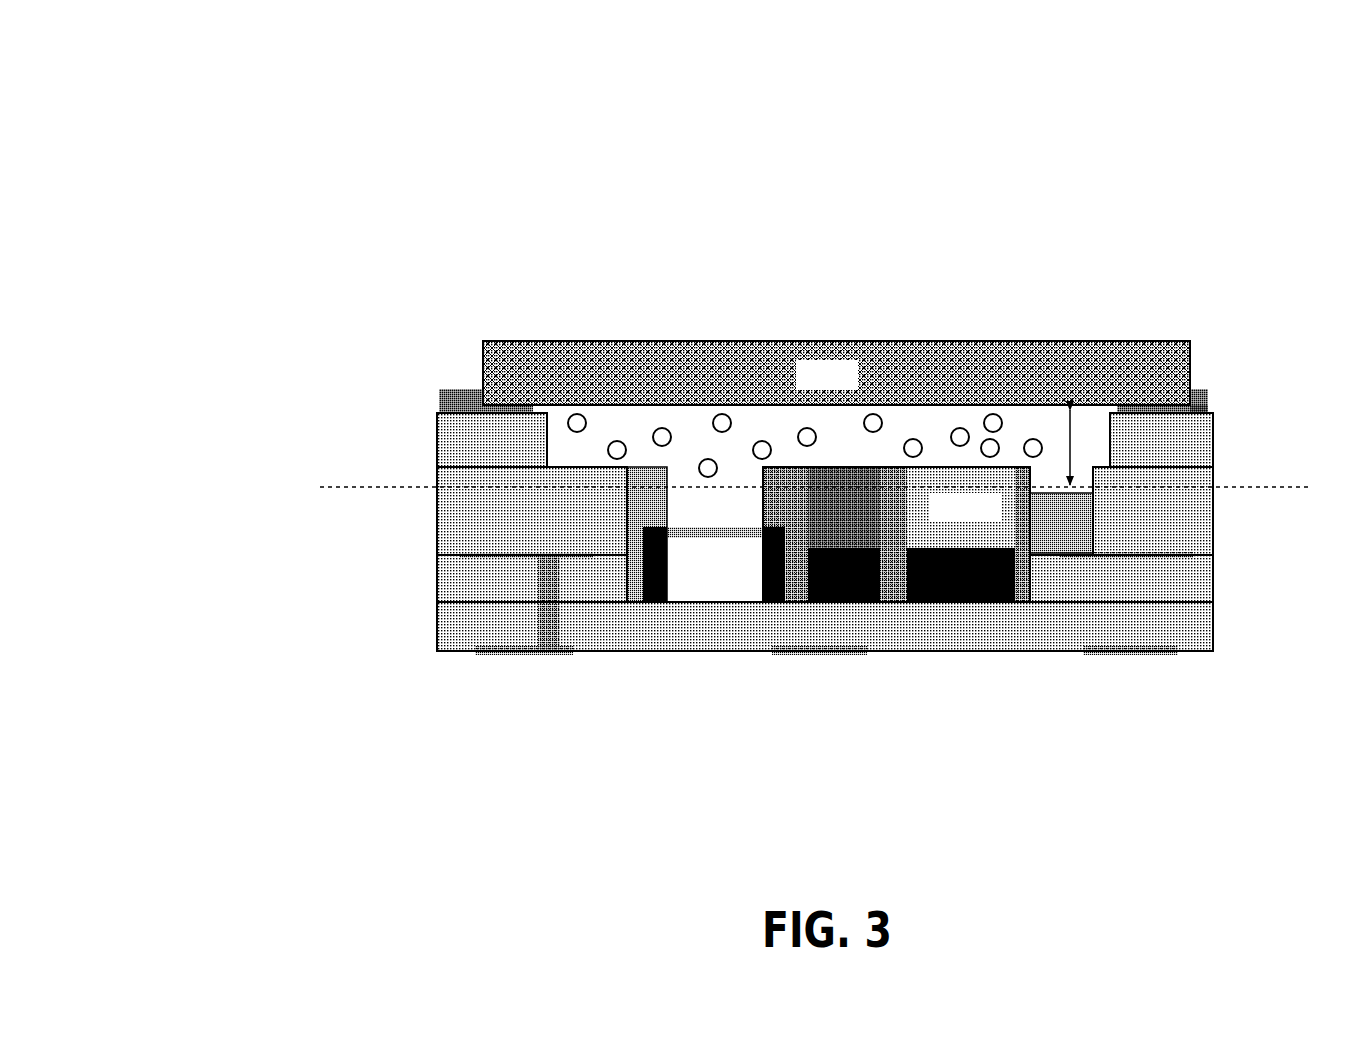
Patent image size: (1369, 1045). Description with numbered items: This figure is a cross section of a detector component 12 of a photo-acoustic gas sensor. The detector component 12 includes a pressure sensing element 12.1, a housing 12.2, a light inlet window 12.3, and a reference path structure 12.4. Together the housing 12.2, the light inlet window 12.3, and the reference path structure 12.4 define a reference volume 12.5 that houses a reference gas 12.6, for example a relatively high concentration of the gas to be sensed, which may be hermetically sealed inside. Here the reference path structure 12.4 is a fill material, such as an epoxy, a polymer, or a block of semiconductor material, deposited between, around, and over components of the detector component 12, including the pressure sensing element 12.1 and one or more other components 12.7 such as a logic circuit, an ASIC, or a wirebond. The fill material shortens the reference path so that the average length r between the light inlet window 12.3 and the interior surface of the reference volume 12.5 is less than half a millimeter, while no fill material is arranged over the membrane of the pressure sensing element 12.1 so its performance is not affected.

The detector component 12 is at (320, 57).
The pressure sensing element 12.1 is at (715, 564).
The housing 12.2 is at (445, 442).
The light inlet window 12.3 is at (836, 373).
The reference path structure 12.4 is at (896, 596).
The reference volume 12.5 is at (926, 430).
The reference gas 12.6 is at (662, 428).
The other components 12.7 is at (957, 602).